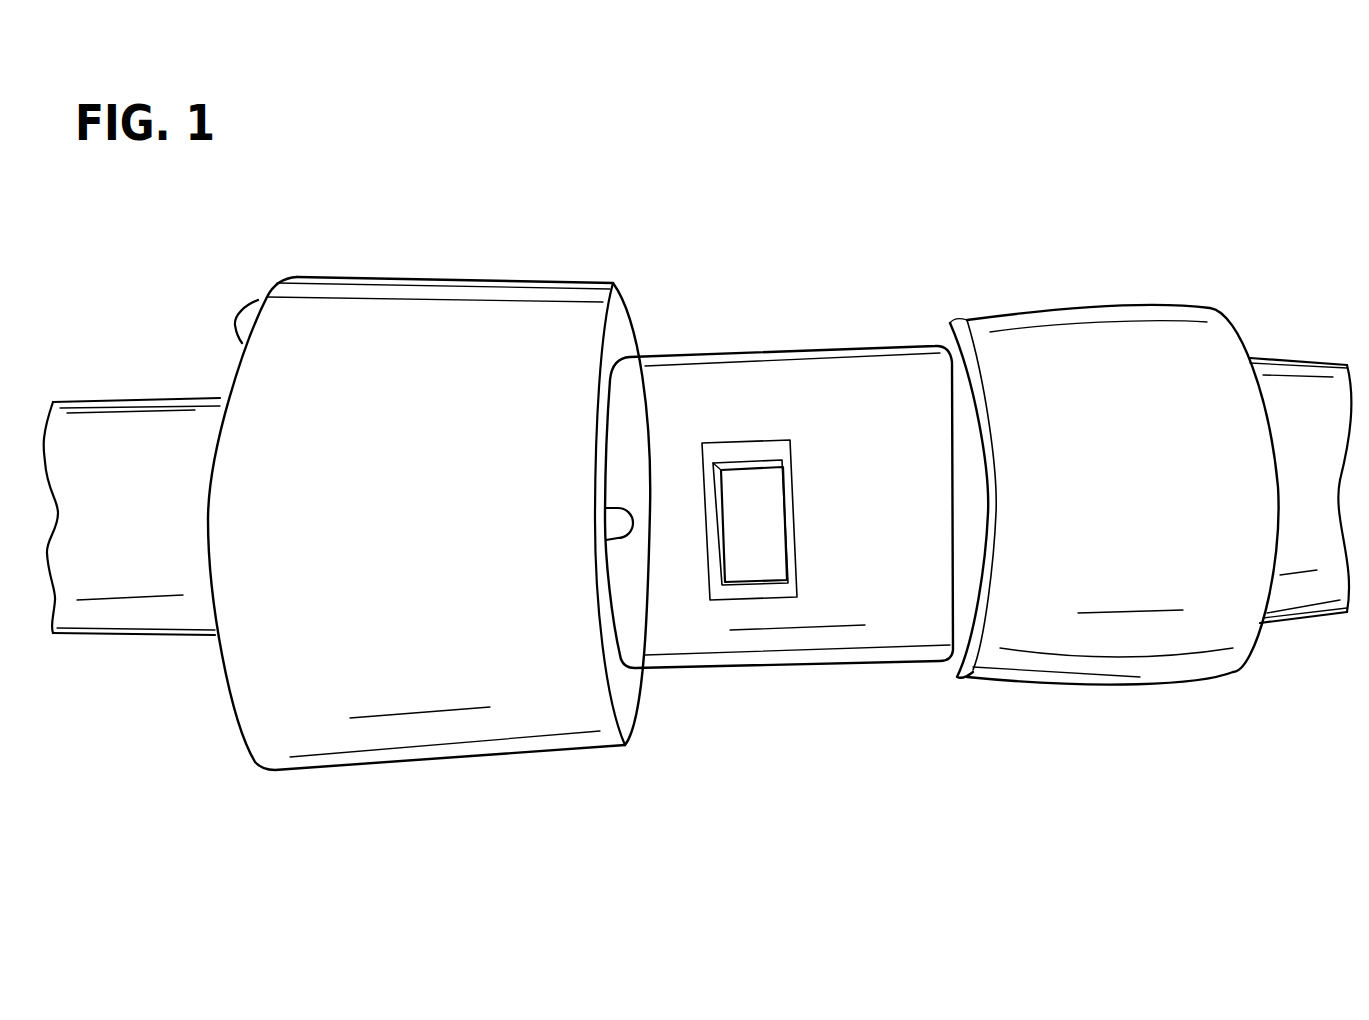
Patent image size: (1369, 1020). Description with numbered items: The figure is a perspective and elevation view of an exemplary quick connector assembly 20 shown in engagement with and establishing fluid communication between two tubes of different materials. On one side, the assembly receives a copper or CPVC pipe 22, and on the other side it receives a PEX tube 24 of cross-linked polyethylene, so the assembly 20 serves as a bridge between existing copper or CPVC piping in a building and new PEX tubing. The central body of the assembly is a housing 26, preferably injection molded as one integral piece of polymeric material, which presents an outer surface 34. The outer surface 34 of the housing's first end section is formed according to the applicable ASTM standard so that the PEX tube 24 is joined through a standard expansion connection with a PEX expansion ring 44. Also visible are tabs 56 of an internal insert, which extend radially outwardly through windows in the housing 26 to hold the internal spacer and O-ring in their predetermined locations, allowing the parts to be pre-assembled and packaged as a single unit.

The quick connector assembly 20 is at (743, 499).
The copper or CPVC pipe 22 is at (127, 400).
The PEX tube 24 is at (1290, 387).
The housing 26 is at (779, 500).
The outer surface 34 is at (698, 360).
The PEX expansion ring 44 is at (420, 295).
The tabs 56 is at (725, 555).